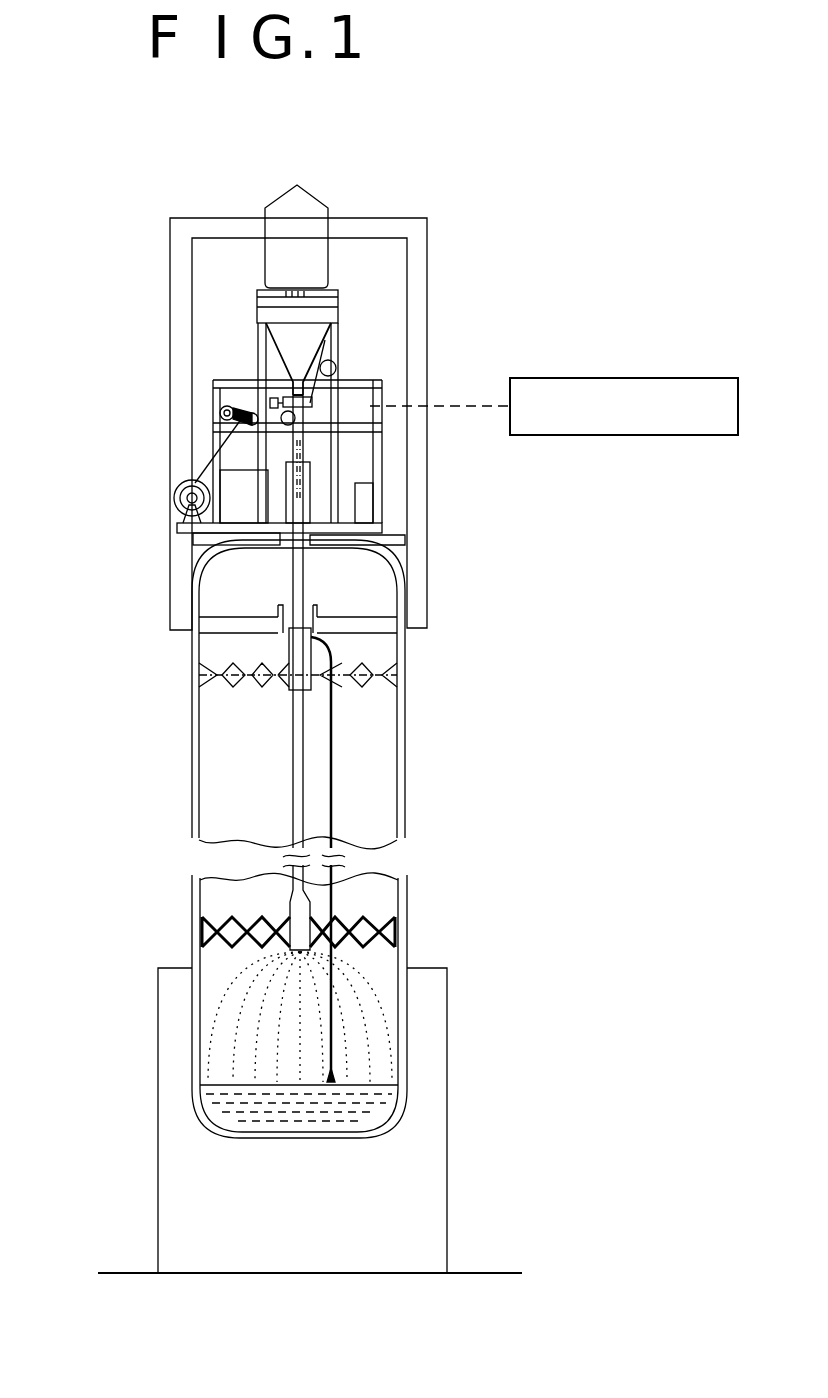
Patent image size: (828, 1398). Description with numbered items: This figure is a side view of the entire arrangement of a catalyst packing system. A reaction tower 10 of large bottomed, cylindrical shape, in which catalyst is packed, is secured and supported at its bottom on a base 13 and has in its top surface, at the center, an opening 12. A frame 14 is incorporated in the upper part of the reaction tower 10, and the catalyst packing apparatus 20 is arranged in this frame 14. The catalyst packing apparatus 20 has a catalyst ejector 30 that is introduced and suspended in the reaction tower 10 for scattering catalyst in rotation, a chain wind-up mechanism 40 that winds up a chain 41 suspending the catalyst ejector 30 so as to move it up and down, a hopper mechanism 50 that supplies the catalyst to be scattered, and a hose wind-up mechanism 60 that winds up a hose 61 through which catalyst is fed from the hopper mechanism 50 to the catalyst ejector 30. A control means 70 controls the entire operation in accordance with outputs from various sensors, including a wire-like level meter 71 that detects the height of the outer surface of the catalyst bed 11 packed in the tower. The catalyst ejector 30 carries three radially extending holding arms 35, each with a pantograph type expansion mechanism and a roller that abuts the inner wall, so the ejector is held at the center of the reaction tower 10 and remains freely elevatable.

The reaction tower 10 is at (162, 760).
The treatment liquid 11 is at (227, 1108).
The opening 12 is at (285, 550).
The base 13 is at (158, 1200).
The frame 14 is at (170, 272).
The catalyst packing apparatus 20 is at (585, 228).
The catalyst ejector 30 is at (285, 462).
The holding arms 35 is at (370, 928).
The chain wind-up mechanism 40 is at (238, 403).
The chain 41 is at (298, 470).
The hopper mechanism 50 is at (320, 317).
The hose wind-up mechanism 60 is at (257, 368).
The hose 61 is at (293, 806).
The control means 70 is at (613, 378).
The wire-like level meter 71 is at (328, 755).